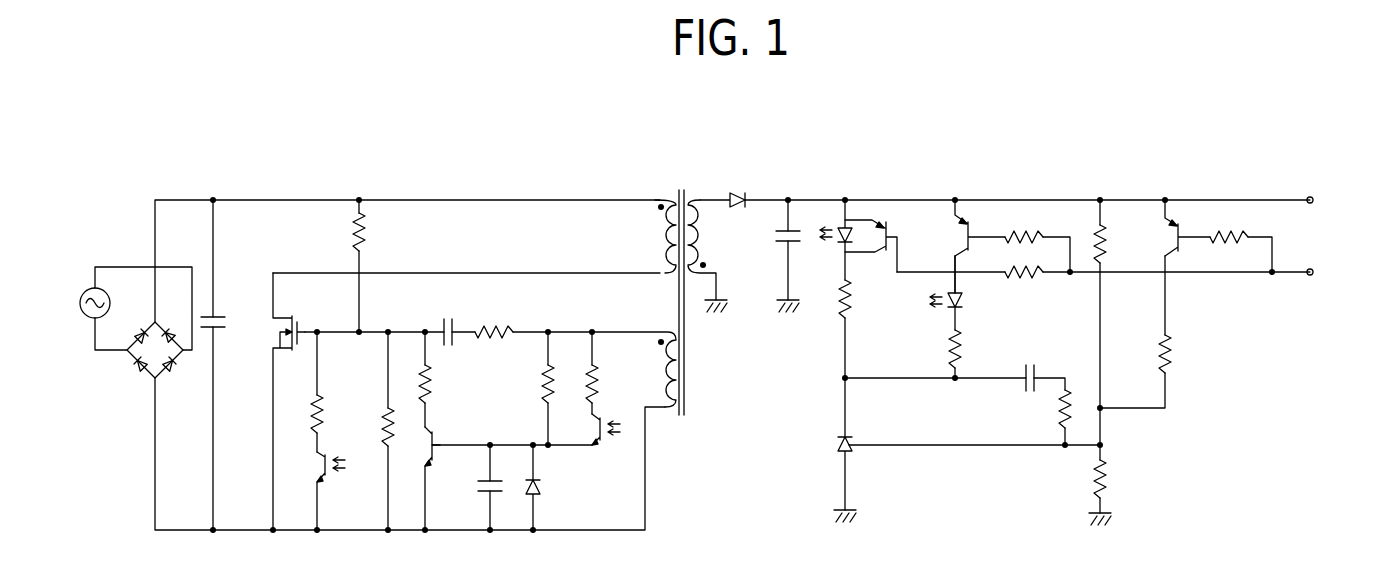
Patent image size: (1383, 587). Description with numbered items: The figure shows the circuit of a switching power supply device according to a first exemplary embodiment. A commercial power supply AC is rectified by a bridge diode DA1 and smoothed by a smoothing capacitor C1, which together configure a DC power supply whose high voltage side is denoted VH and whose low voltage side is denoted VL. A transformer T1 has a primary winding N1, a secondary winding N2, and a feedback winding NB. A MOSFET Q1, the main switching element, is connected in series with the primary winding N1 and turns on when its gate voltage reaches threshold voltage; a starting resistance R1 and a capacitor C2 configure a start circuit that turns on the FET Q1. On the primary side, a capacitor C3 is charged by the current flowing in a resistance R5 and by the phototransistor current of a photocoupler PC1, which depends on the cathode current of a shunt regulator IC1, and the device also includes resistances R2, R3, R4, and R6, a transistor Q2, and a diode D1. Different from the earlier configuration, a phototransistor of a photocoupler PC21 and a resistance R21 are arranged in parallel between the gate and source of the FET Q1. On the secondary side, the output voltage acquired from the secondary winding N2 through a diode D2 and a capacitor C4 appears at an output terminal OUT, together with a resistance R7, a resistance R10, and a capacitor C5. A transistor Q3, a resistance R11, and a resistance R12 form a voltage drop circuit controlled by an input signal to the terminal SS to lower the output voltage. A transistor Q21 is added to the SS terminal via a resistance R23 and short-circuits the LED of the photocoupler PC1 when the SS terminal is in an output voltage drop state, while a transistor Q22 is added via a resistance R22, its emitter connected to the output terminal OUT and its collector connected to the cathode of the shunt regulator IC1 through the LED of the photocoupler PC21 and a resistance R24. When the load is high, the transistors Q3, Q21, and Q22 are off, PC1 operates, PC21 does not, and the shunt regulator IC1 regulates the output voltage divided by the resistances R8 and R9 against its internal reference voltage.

The high voltage side VH is at (170, 182).
The low voltage side VL is at (170, 552).
The commercial power supply AC is at (127, 303).
The bridge diode DA1 is at (146, 367).
The smoothing capacitor C1 is at (223, 365).
The FET Q1 is at (289, 401).
The starting resistance R1 is at (375, 266).
The resistance R21 is at (338, 392).
The photocoupler PC21 is at (666, 393).
The resistance R3 is at (403, 431).
The resistance R4 is at (442, 379).
The transistor Q2 is at (447, 473).
The capacitor C2 is at (449, 315).
The resistance R2 is at (494, 312).
The resistance R5 is at (533, 388).
The resistance R6 is at (608, 373).
The photocoupler PC1 is at (722, 342).
The capacitor C3 is at (501, 488).
The diode D1 is at (549, 487).
The transformer T1 is at (683, 287).
The primary winding N1 is at (655, 236).
The secondary winding N2 is at (710, 256).
The feedback winding NB is at (650, 367).
The diode D2 is at (727, 183).
The capacitor C4 is at (778, 259).
The resistance R7 is at (862, 329).
The shunt regulator IC1 is at (833, 450).
The transistor Q21 is at (885, 235).
The transistor Q22 is at (961, 228).
The resistance R22 is at (1037, 235).
The resistance R23 is at (1037, 287).
The resistance R24 is at (977, 354).
The capacitor C5 is at (1047, 362).
The resistance R10 is at (1042, 417).
The resistance R8 is at (1117, 330).
The resistance R9 is at (1114, 492).
The resistance R11 is at (1155, 332).
The transistor Q3 is at (1187, 227).
The resistance R12 is at (1241, 235).
The output terminal OUT is at (1343, 200).
The control terminal for dropping output voltage SS is at (1335, 273).